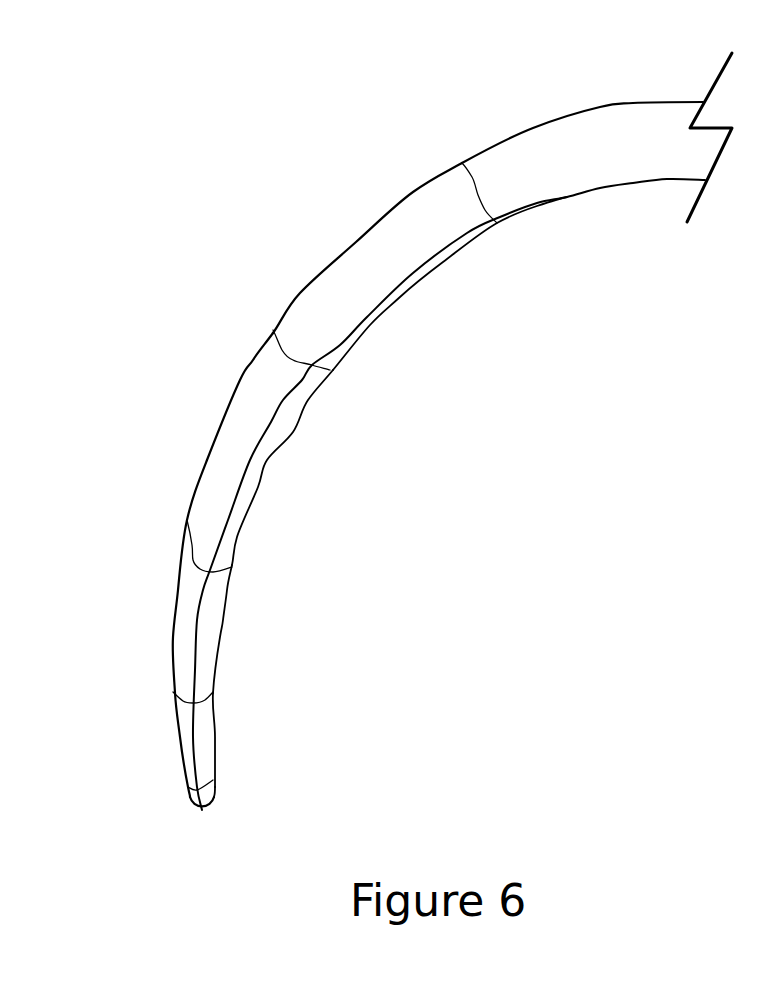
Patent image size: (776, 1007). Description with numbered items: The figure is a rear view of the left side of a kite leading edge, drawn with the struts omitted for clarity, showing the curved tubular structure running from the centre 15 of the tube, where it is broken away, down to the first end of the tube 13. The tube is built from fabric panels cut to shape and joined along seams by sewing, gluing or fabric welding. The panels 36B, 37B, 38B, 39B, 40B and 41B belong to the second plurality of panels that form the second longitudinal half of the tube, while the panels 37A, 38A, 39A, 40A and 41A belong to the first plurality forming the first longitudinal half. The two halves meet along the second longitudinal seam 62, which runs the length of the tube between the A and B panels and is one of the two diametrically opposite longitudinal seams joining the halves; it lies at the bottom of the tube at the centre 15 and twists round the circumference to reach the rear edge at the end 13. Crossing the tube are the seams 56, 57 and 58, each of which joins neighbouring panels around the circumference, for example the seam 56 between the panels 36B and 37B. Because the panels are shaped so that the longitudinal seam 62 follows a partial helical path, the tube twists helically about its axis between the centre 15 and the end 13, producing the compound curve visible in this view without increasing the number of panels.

The first end of the tube 13 is at (203, 812).
The centre of the tube 15 is at (700, 105).
The panel 36B is at (593, 143).
The panel 37A is at (352, 328).
The panel 37B is at (362, 257).
The panel 38A is at (255, 485).
The panel 38B is at (217, 467).
The panel 39A is at (213, 620).
The panel 39B is at (178, 657).
The panel 40A is at (207, 732).
The panel 40B is at (188, 737).
The panel 41A is at (217, 797).
The panel 41B is at (188, 797).
The seam 56 is at (478, 195).
The seam 57 is at (290, 355).
The seam 58 is at (187, 520).
The second longitudinal seam 62 is at (273, 422).